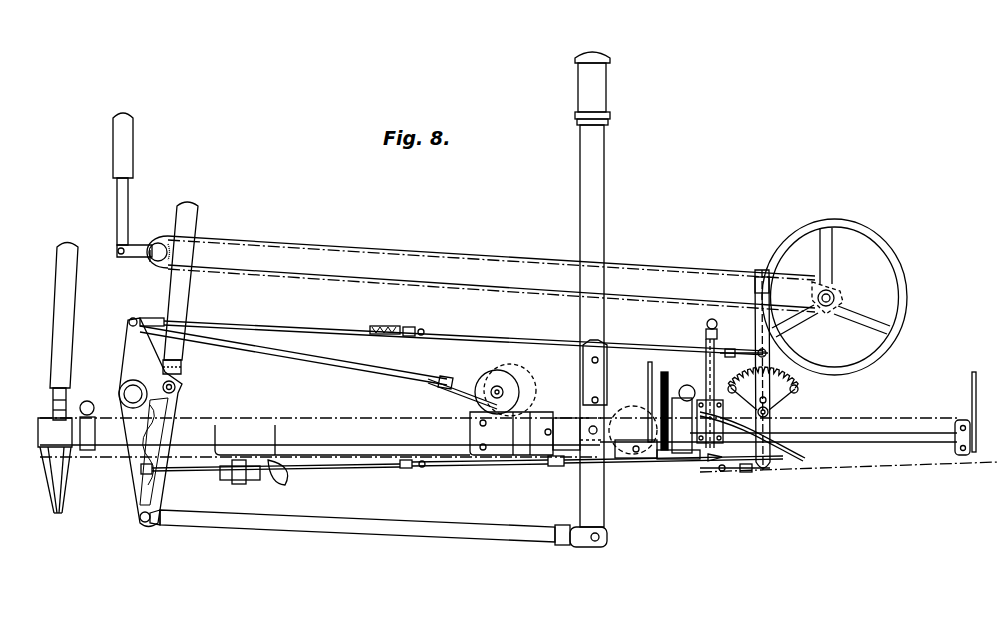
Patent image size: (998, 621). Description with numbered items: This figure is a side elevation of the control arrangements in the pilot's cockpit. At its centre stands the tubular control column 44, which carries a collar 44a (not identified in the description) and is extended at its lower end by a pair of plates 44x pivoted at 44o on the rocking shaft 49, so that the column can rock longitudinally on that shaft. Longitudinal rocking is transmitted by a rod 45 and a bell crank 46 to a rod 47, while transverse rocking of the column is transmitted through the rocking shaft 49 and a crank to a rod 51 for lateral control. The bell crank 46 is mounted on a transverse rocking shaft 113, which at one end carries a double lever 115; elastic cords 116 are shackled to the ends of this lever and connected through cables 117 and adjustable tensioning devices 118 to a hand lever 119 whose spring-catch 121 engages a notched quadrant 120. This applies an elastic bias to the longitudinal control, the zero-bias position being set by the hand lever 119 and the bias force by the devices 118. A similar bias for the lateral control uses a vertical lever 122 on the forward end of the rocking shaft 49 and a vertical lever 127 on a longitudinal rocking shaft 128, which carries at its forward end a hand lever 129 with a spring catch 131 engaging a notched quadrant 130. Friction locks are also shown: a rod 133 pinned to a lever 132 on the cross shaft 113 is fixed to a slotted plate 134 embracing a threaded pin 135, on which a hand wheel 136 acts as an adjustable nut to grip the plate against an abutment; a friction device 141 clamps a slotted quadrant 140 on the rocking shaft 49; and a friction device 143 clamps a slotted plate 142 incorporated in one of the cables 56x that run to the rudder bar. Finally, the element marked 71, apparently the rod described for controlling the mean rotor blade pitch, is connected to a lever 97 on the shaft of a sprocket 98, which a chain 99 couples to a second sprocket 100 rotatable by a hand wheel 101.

The hand lever 71 is at (128, 146).
The lever 97 is at (143, 250).
The sprocket 98 is at (152, 262).
The chain 99 is at (228, 237).
The rod 51 is at (60, 270).
The rod 47 is at (181, 296).
The double lever 115 is at (131, 321).
The elastic cords 116 is at (258, 329).
The lever 132 is at (133, 356).
The transverse rocking shaft 113 is at (123, 390).
The bell crank 46 is at (176, 386).
The rod 133 is at (257, 354).
The rocking shaft 49 is at (336, 434).
The slotted plate 134 is at (458, 397).
The cables 117 is at (440, 467).
The threaded pin 135 is at (489, 382).
The hand wheel 136 is at (510, 366).
The post collar 44a is at (608, 115).
The control column 44 is at (600, 170).
The pivot 44o is at (586, 427).
The plates 44x is at (598, 507).
The hand lever 119 is at (757, 277).
The second sprocket 100 is at (812, 290).
The hand wheel 101 is at (838, 226).
The hand lever 129 is at (706, 344).
The adjustable tensioning devices 118 is at (718, 351).
The friction locking device 141 is at (647, 373).
The slotted quadrant 140 is at (660, 410).
The spring catch 131 is at (705, 400).
The notched quadrant 120 is at (800, 383).
The spring-catch 121 is at (790, 392).
The longitudinal rocking shaft 128 is at (893, 436).
The vertical lever 127 is at (972, 396).
The vertical lever 122 is at (62, 470).
The rod 45 is at (380, 529).
The friction device 143 is at (625, 458).
The slotted plate 142 is at (680, 459).
The cables 56x is at (786, 461).
The notched quadrant 130 is at (791, 454).